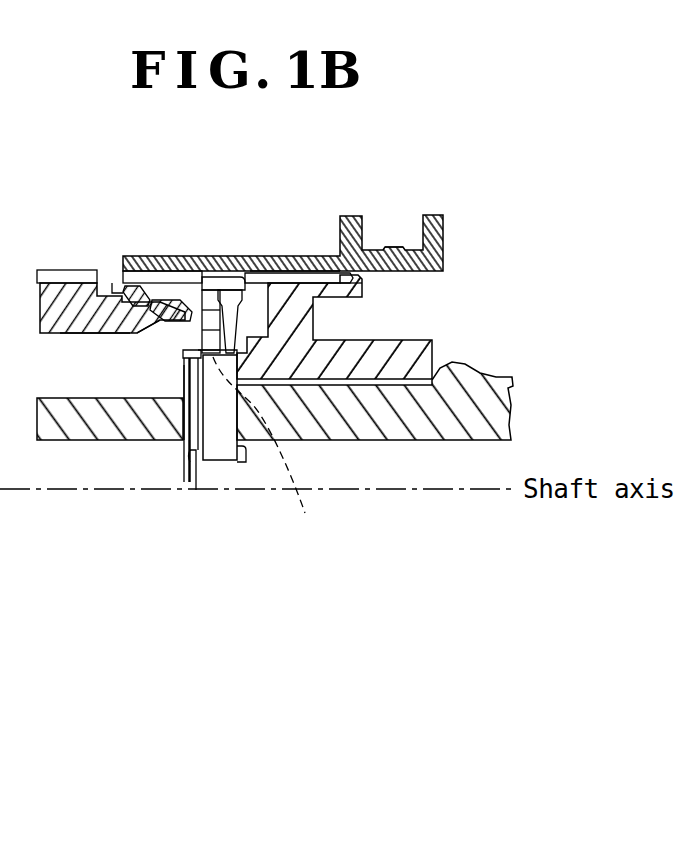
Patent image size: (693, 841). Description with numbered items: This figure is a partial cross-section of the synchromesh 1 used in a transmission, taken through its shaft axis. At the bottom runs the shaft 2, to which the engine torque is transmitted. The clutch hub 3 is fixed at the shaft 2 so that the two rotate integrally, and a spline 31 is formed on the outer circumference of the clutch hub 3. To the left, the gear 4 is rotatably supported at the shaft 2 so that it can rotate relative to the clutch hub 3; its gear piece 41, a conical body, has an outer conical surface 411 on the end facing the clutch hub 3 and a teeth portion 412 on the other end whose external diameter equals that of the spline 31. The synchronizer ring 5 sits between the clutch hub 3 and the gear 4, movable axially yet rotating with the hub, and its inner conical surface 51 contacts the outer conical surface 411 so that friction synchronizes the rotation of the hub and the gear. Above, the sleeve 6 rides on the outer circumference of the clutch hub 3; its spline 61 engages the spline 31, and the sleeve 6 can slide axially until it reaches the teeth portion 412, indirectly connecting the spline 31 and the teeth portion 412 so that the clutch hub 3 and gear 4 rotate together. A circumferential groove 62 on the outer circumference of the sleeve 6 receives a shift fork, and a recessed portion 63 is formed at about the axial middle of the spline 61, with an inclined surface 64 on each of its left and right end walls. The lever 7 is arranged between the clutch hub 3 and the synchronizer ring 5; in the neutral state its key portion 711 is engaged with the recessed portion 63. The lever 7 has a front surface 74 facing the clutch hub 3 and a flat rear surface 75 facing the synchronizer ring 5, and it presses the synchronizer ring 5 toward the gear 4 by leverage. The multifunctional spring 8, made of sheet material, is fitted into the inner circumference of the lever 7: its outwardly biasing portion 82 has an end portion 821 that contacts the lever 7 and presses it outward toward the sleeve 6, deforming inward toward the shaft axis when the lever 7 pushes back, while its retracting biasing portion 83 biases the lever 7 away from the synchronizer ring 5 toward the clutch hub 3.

The synchromesh 1 is at (380, 141).
The shaft 2 is at (492, 377).
The clutch hub 3 is at (382, 340).
The spline 31 is at (364, 281).
The gear 4 is at (62, 342).
The gear piece 41 is at (100, 338).
The outer conical surface 411 is at (154, 335).
The teeth portion 412 is at (52, 270).
The synchronizer ring 5 is at (118, 284).
The inner conical surface 51 is at (150, 300).
The sleeve 6 is at (431, 216).
The spline 61 is at (298, 257).
The circumferential groove 62 is at (392, 247).
The recessed portion 63 is at (203, 257).
The inclined surface 64 is at (248, 273).
The lever 7 is at (220, 465).
The key portion 711 is at (222, 277).
The front surface 74 is at (243, 458).
The rear surface 75 is at (196, 455).
The multifunctional spring 8 is at (183, 478).
The outwardly biasing portion 82 is at (187, 352).
The end portion 821 is at (270, 448).
The retracting biasing portion 83 is at (186, 447).